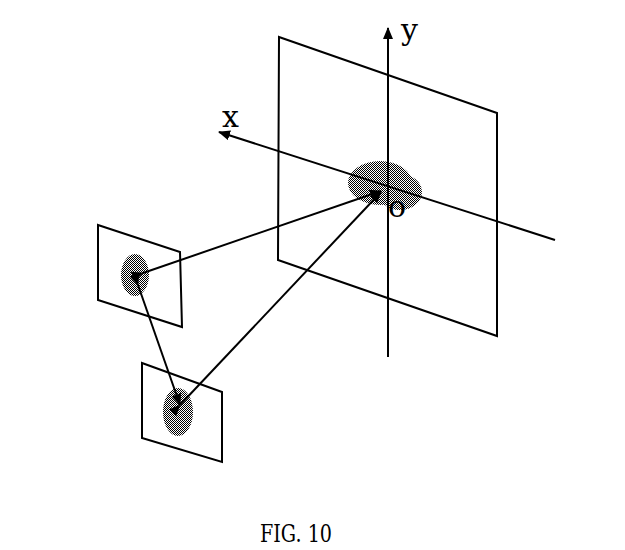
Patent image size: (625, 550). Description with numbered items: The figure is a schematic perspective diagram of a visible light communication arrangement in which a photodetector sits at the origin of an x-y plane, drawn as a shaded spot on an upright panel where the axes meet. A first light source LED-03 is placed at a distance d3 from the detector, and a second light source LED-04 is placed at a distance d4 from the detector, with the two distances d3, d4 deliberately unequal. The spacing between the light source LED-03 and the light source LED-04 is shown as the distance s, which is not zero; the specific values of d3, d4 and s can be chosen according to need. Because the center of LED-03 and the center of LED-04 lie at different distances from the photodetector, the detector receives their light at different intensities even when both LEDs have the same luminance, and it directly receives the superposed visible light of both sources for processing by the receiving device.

The light source LED-03 is at (109, 292).
The light source LED-04 is at (169, 431).
The distance d3 is at (262, 232).
The distance d4 is at (280, 298).
The distance s is at (159, 345).